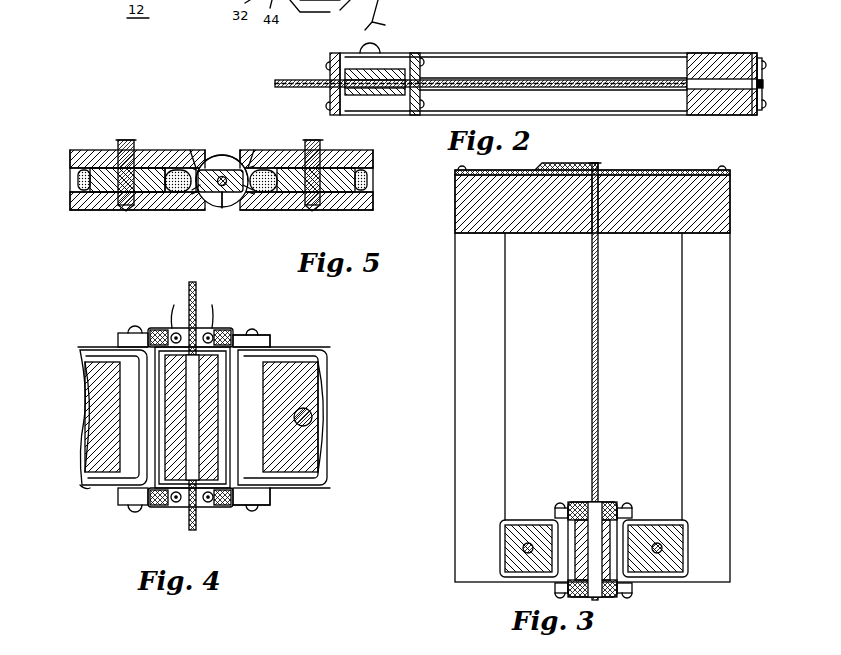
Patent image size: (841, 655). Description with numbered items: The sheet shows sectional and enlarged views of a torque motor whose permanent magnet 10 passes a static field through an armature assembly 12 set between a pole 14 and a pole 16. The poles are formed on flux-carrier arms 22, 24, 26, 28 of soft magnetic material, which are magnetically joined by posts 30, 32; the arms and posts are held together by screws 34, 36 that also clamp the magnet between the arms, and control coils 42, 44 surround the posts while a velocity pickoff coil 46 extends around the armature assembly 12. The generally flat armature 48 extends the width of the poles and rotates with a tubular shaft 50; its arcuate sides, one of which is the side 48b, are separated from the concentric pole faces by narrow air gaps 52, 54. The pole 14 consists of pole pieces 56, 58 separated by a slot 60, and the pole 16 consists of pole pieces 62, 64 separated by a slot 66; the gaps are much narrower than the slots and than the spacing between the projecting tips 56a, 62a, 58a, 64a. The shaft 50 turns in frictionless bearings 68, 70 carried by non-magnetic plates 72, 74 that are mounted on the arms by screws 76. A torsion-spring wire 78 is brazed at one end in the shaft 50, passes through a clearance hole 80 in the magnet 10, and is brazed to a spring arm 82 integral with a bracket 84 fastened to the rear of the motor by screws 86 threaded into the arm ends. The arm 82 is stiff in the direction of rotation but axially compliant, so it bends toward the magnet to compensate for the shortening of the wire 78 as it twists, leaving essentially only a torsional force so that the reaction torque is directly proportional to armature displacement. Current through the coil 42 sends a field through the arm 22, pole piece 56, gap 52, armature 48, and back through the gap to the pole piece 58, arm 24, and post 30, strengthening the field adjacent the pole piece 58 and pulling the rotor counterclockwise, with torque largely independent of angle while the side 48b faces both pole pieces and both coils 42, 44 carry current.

In FIG. 2, the permanent magnet 10 is at (736, 60).
In FIG. 3, the permanent magnet 10 is at (640, 226).
In FIG. 3, the armature assembly 12 is at (625, 496).
In FIG. 4, the armature assembly 12 is at (228, 313).
In FIG. 5, the armature assembly 12 is at (230, 132).
In FIG. 4, the pole 14 is at (115, 344).
In FIG. 5, the pole 14 is at (175, 218).
In FIG. 4, the pole 16 is at (275, 348).
In FIG. 5, the pole 16 is at (247, 210).
In FIG. 2, the arm 22 is at (574, 64).
In FIG. 5, the arm 22 is at (74, 160).
In FIG. 2, the arm 24 is at (640, 108).
In FIG. 3, the arm 24 is at (502, 316).
In FIG. 5, the arm 24 is at (78, 206).
In FIG. 5, the arm 26 is at (352, 152).
In FIG. 3, the arm 28 is at (725, 308).
In FIG. 5, the arm 28 is at (344, 210).
In FIG. 3, the post 30 is at (520, 568).
In FIG. 4, the post 30 is at (100, 412).
In FIG. 5, the post 30 is at (108, 176).
In FIG. 3, the post 32 is at (670, 572).
In FIG. 4, the post 32 is at (325, 392).
In FIG. 5, the post 32 is at (300, 178).
In FIG. 2, the screw 34 is at (372, 44).
In FIG. 5, the screw 34 is at (120, 146).
In FIG. 4, the screw 36 is at (314, 417).
In FIG. 5, the screw 36 is at (322, 146).
In FIG. 4, the control coil 42 is at (100, 490).
In FIG. 5, the control coil 42 is at (76, 186).
In FIG. 4, the control coil 44 is at (300, 492).
In FIG. 5, the control coil 44 is at (368, 184).
In FIG. 3, the velocity pickoff coil 46 is at (605, 498).
In FIG. 4, the velocity pickoff coil 46 is at (165, 506).
In FIG. 5, the velocity pickoff coil 46 is at (162, 168).
In FIG. 3, the armature 48 is at (582, 510).
In FIG. 4, the armature 48 is at (216, 505).
In FIG. 5, the armature 48 is at (222, 170).
In FIG. 5, the side of armature 48b is at (168, 208).
In FIG. 4, the tubular shaft 50 is at (192, 512).
In FIG. 5, the tubular shaft 50 is at (224, 176).
In FIG. 5, the air gap 52 is at (194, 176).
In FIG. 5, the air gap 54 is at (232, 208).
In FIG. 5, the pole piece 56 is at (212, 158).
In FIG. 5, the projecting tip 56a is at (216, 168).
In FIG. 5, the pole piece 58 is at (206, 204).
In FIG. 5, the projecting tip 58a is at (200, 210).
In FIG. 5, the slot 60 is at (122, 206).
In FIG. 5, the pole piece 62 is at (258, 172).
In FIG. 5, the projecting tip 62a is at (242, 170).
In FIG. 5, the pole piece 64 is at (246, 202).
In FIG. 5, the projecting tip 64a is at (236, 208).
In FIG. 5, the slot 66 is at (236, 196).
In FIG. 4, the frictionless bearing 68 is at (170, 328).
In FIG. 4, the frictionless bearing 70 is at (207, 508).
In FIG. 2, the plate 72 is at (330, 58).
In FIG. 3, the plate 72 is at (630, 590).
In FIG. 4, the plate 72 is at (268, 506).
In FIG. 2, the plate 74 is at (416, 56).
In FIG. 3, the plate 74 is at (630, 510).
In FIG. 4, the plate 74 is at (262, 336).
In FIG. 5, the plate 74 is at (215, 158).
In FIG. 3, the screw 76 is at (562, 505).
In FIG. 4, the screw 76 is at (132, 328).
In FIG. 2, the wire 78 is at (640, 79).
In FIG. 3, the wire 78 is at (599, 343).
In FIG. 4, the wire 78 is at (196, 296).
In FIG. 2, the clearance hole 80 is at (752, 52).
In FIG. 3, the clearance hole 80 is at (590, 226).
In FIG. 2, the spring arm 82 is at (764, 82).
In FIG. 3, the spring arm 82 is at (565, 163).
In FIG. 2, the bracket 84 is at (760, 58).
In FIG. 3, the bracket 84 is at (658, 170).
In FIG. 2, the screw 86 is at (765, 64).
In FIG. 3, the screw 86 is at (726, 168).